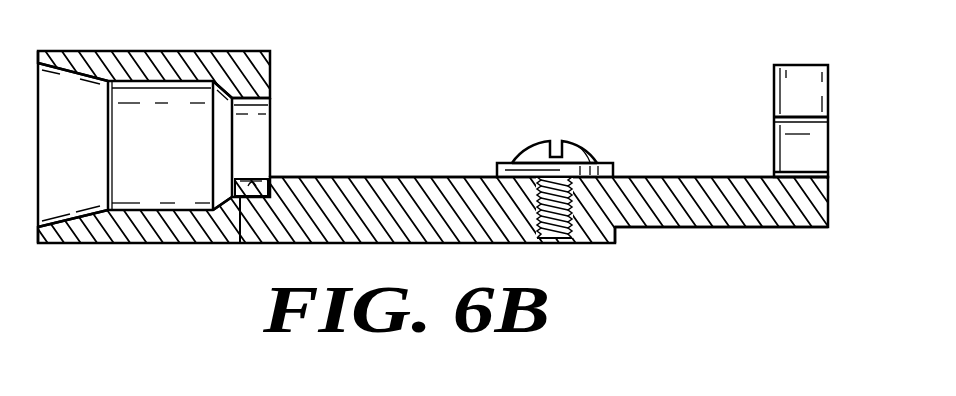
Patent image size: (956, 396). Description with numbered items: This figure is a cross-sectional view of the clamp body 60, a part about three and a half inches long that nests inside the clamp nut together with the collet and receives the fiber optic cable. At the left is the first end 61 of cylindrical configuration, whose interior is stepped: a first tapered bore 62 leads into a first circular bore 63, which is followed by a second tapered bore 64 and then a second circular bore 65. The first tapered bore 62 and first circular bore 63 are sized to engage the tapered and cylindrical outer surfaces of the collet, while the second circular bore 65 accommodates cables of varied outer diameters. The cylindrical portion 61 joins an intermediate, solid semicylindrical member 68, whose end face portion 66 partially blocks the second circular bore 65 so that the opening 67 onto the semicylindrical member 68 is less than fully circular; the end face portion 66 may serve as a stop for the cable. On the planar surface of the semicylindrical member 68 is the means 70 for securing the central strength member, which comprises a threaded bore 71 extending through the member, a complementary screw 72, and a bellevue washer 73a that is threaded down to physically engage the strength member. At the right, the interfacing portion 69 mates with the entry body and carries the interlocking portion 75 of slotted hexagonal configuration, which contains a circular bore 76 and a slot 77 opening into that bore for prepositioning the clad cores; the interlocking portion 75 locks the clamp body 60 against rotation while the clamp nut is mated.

The clamp body 60 is at (430, 92).
The first end of cylindrical configuration 61 is at (200, 48).
The first tapered bore 62 is at (86, 218).
The first circular bore 63 is at (150, 205).
The second tapered bore 64 is at (230, 190).
The second circular bore 65 is at (250, 245).
The end face portion 66 is at (254, 180).
The opening 67 is at (270, 105).
The semicylindrical member 68 is at (381, 166).
The interfacing portion 69 is at (681, 228).
The means for securing the central strength member 70 is at (620, 156).
The threaded bore 71 is at (559, 247).
The screw 72 is at (576, 150).
The bellevue washer 73a is at (505, 165).
The interlocking portion 75 is at (773, 88).
The circular bore 76 is at (805, 151).
The slot 77 is at (802, 72).